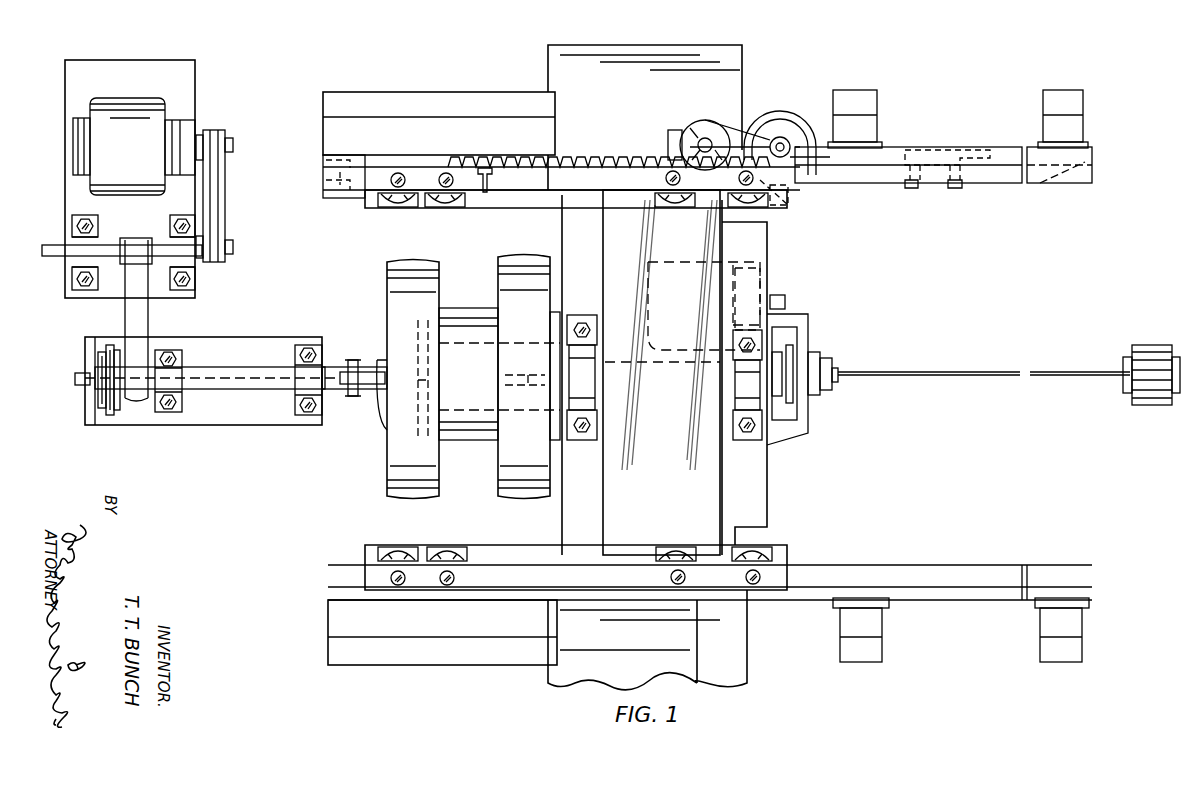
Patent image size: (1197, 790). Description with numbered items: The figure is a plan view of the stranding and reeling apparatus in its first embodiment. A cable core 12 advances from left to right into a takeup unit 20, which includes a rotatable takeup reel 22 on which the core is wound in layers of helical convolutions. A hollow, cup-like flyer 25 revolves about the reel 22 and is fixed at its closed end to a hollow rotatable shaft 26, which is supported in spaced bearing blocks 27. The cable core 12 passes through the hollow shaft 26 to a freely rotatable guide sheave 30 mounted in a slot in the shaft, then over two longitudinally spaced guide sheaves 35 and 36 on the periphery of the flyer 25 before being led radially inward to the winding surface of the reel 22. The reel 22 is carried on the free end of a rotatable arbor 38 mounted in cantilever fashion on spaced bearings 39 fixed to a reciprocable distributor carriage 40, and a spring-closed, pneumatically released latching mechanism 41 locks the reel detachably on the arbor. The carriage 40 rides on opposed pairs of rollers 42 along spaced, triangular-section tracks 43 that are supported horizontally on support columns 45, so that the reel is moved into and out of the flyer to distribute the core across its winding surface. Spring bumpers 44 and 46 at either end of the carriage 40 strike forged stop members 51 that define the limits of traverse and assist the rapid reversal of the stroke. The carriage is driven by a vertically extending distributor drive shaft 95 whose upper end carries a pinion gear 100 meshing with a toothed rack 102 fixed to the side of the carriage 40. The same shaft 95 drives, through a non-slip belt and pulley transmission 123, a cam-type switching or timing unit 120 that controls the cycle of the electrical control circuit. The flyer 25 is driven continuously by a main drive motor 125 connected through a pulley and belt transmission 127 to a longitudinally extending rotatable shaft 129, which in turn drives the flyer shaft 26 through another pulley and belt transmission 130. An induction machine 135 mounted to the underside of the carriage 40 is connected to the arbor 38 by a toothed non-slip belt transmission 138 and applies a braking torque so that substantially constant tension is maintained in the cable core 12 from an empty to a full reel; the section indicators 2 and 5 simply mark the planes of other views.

The section line 2 is at (292, 396).
The section line 5 is at (661, 134).
The cable core 12 is at (82, 381).
The takeup unit 20 is at (366, 415).
The takeup reel 22 is at (527, 334).
The flyer 25 is at (470, 306).
The hollow rotatable shaft 26 is at (274, 374).
The bearing blocks 27 is at (182, 358).
The guide sheave 30 is at (340, 365).
The guide sheave 35 is at (412, 379).
The guide sheave 36 is at (524, 377).
The arbor 38 is at (691, 401).
The bearings 39 is at (580, 440).
The distributor carriage 40 is at (778, 471).
The latching mechanism 41 is at (1148, 345).
The rollers 42 is at (437, 222).
The tracks 43 is at (864, 180).
The spring bumper 44 is at (372, 192).
The support columns 45 is at (376, 91).
The spring bumper 46 is at (787, 195).
The stop member 51 is at (330, 198).
The distributor drive shaft 95 is at (810, 158).
The pinion gear 100 is at (786, 109).
The toothed rack 102 is at (534, 156).
The switching or timing unit 120 is at (681, 116).
The non-slip belt and pulley transmission 123 is at (755, 129).
The main drive motor 125 is at (174, 104).
The pulley and belt transmission 127 is at (227, 175).
The rotatable shaft 129 is at (58, 256).
The pulley and belt transmission 130 is at (157, 316).
The induction machine 135 is at (750, 260).
The toothed non-slip belt transmission 138 is at (799, 342).